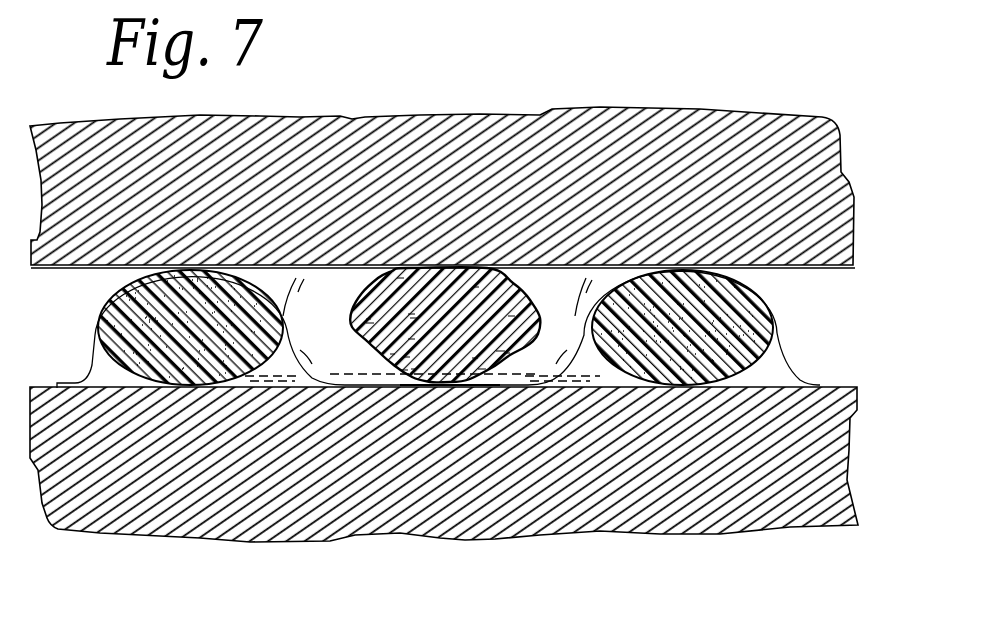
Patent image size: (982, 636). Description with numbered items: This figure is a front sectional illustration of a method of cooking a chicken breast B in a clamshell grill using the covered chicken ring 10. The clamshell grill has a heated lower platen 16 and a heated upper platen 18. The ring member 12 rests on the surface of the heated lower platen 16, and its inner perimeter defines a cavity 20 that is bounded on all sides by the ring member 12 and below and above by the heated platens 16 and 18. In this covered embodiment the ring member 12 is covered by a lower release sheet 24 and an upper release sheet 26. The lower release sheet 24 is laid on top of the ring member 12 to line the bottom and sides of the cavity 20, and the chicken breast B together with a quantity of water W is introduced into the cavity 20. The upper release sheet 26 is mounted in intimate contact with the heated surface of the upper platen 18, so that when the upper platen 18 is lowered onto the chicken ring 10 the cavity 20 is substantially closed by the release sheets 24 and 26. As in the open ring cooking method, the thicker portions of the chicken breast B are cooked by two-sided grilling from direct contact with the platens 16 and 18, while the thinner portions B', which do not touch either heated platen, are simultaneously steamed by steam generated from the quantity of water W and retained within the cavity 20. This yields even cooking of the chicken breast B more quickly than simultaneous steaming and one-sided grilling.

The chicken ring 10 is at (88, 308).
The ring member 12 is at (100, 332).
The heated lower platen 16 is at (693, 513).
The heated upper platen 18 is at (490, 136).
The cavity 20 is at (542, 278).
The lower release sheet 24 is at (560, 378).
The upper release sheet 26 is at (349, 266).
The chicken breast B is at (415, 425).
The thinner portions of chicken breast B' is at (384, 317).
The quantity of water W is at (492, 363).